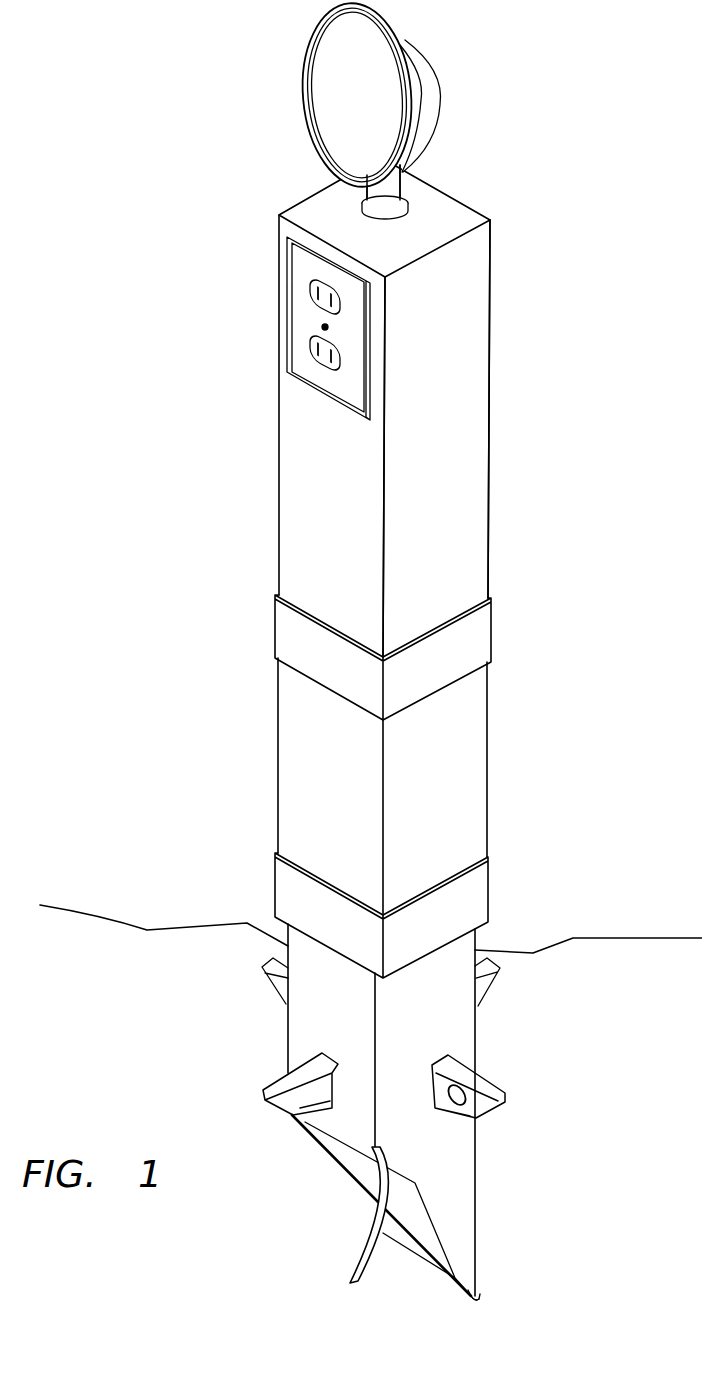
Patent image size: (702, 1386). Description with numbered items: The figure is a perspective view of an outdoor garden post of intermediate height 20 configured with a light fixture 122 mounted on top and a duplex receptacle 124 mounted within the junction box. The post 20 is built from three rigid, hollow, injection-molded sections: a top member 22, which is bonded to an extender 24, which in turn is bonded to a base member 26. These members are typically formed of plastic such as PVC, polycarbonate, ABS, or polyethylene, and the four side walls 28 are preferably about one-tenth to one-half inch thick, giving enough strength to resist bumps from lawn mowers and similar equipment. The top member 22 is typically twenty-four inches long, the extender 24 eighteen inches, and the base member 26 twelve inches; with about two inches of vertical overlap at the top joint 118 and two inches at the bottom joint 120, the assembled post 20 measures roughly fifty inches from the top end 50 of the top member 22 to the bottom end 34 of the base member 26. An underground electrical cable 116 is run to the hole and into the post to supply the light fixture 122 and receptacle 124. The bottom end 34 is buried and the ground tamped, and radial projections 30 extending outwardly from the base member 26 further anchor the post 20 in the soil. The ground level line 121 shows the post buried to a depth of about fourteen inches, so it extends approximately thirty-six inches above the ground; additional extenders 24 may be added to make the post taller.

The garden post of intermediate height 20 is at (371, 651).
The top member 22 is at (477, 481).
The extender 24 is at (477, 780).
The base member 26 is at (455, 1032).
The side walls 28 is at (443, 425).
The radial projections 30 is at (497, 1092).
The bottom end 34 is at (485, 1303).
The top end 50 is at (465, 215).
The underground electrical cable 116 is at (363, 1260).
The top joint 118 is at (505, 675).
The bottom joint 120 is at (502, 932).
The ground level line 121 is at (53, 910).
The light fixture 122 is at (432, 83).
The duplex receptacle 124 is at (315, 295).